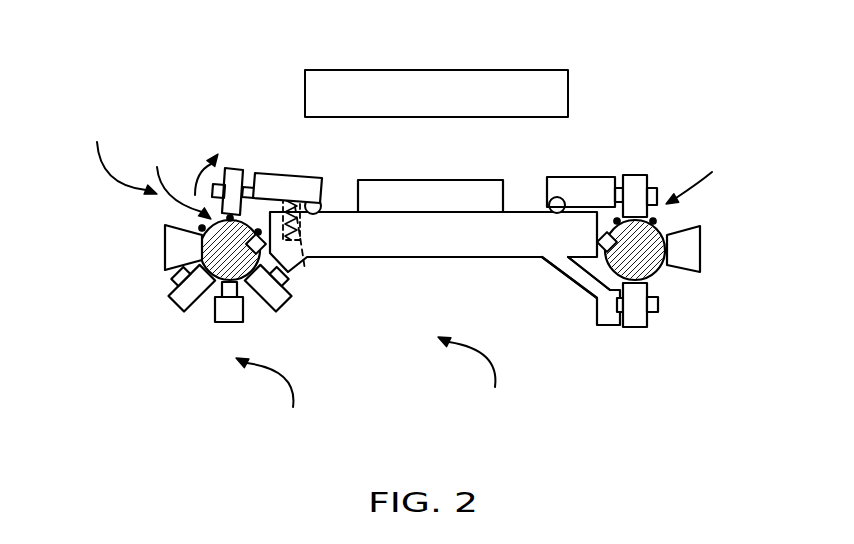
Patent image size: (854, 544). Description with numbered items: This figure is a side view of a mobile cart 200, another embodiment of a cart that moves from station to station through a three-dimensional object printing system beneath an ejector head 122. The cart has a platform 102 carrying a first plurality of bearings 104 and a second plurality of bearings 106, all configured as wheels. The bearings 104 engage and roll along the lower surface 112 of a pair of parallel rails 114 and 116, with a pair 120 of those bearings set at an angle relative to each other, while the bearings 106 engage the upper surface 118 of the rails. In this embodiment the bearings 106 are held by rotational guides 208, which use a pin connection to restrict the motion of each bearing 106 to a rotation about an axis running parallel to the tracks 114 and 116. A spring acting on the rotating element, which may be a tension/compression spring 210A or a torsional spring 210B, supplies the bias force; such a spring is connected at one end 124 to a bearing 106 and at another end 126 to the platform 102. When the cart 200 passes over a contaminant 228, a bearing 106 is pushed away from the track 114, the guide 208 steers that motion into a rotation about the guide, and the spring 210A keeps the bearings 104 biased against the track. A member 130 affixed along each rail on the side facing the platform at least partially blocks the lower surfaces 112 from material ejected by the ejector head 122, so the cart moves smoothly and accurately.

The platform 102 is at (351, 207).
The first plurality of bearings 104 is at (184, 312).
The second plurality of bearings 106 is at (227, 166).
The lower surface 112 is at (161, 286).
The rail 114 is at (208, 224).
The rail 116 is at (690, 227).
The upper surface 118 is at (412, 156).
The pair of bearings 120 is at (271, 400).
The ejector head 122 is at (305, 92).
The one end 124 is at (285, 170).
The another end 126 is at (306, 246).
The member 130 is at (600, 279).
The mobile cart 200 is at (473, 378).
The rotational guides 208 is at (320, 211).
The tension/compression spring 210A is at (300, 229).
The torsional spring 210B is at (553, 198).
The contaminant 228 is at (176, 179).